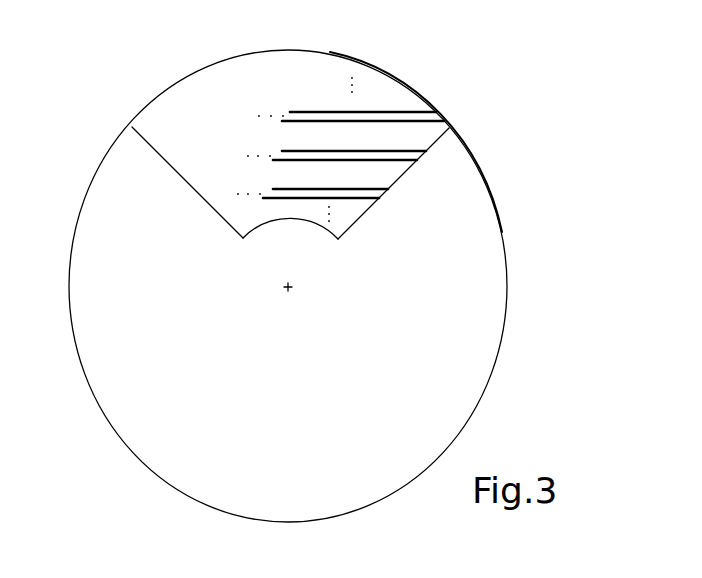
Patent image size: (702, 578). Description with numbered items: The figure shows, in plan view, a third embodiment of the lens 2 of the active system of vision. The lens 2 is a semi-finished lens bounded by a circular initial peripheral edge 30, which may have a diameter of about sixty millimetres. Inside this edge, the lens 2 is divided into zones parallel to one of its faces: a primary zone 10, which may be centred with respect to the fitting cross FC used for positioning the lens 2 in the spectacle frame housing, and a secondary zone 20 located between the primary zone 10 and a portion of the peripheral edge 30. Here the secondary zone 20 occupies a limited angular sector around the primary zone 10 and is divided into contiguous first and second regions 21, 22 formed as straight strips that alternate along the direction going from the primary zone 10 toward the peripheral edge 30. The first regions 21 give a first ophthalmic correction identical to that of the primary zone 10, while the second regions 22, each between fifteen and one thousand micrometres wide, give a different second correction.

The lens 2 is at (555, 120).
The primary zone 10 is at (368, 379).
The secondary zone 20 is at (373, 84).
The first region 21 is at (445, 137).
The second region 22 is at (382, 193).
The initial peripheral edge 30 is at (502, 232).
The fitting cross FC is at (293, 291).